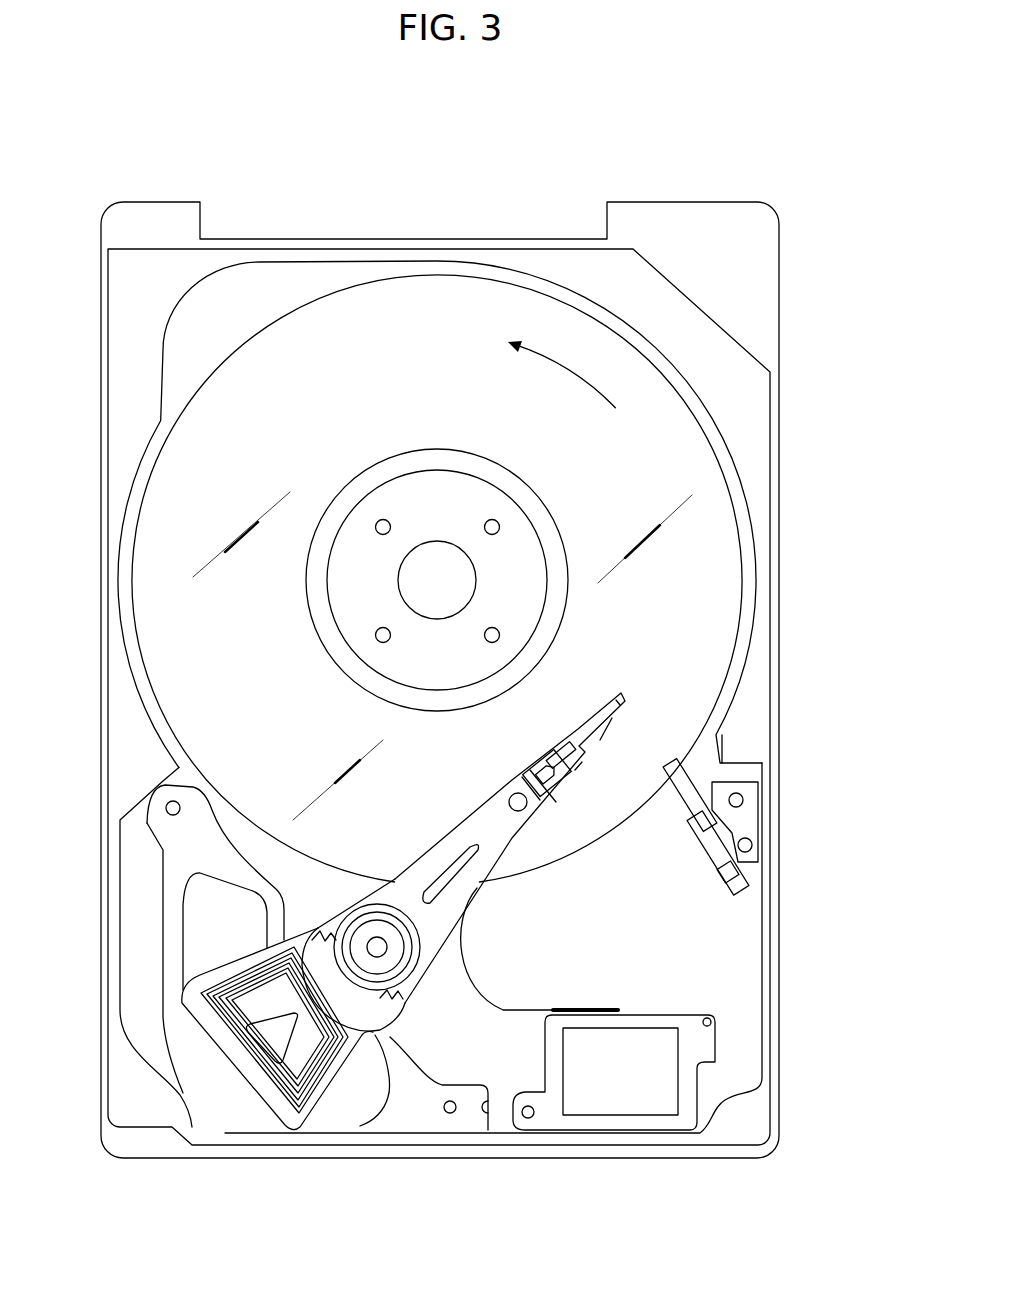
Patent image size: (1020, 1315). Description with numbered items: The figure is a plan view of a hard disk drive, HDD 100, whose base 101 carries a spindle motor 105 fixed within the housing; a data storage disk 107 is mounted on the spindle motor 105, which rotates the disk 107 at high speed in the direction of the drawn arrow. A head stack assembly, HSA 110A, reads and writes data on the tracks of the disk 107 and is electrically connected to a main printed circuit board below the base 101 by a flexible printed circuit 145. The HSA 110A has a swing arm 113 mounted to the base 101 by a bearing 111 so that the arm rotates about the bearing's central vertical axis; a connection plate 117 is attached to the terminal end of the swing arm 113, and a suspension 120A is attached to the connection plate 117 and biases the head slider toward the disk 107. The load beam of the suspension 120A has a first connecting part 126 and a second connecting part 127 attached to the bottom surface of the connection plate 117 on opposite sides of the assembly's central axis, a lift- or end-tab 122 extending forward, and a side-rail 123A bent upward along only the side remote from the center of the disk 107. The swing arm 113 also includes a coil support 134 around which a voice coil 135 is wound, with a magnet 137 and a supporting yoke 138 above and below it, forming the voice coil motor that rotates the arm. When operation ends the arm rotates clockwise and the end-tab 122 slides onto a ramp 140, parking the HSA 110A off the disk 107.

The HDD 100 is at (790, 184).
The base 101 is at (123, 762).
The spindle motor 105 is at (433, 492).
The data storage disk 107 is at (718, 602).
The HSA 110A is at (428, 832).
The bearing 111 is at (377, 947).
The swing arm 113 is at (435, 945).
The connection plate 117 is at (527, 775).
The suspension 120A is at (570, 718).
The end-tab 122 is at (623, 698).
The side-rail 123A is at (600, 740).
The first connecting part 126 is at (552, 745).
The second connecting part 127 is at (575, 770).
The coil support 134 is at (197, 1013).
The voice coil 135 is at (210, 1050).
The magnet 137 is at (372, 1110).
The yoke 138 is at (203, 1097).
The ramp 140 is at (700, 775).
The flexible printed circuit 145 is at (522, 1002).